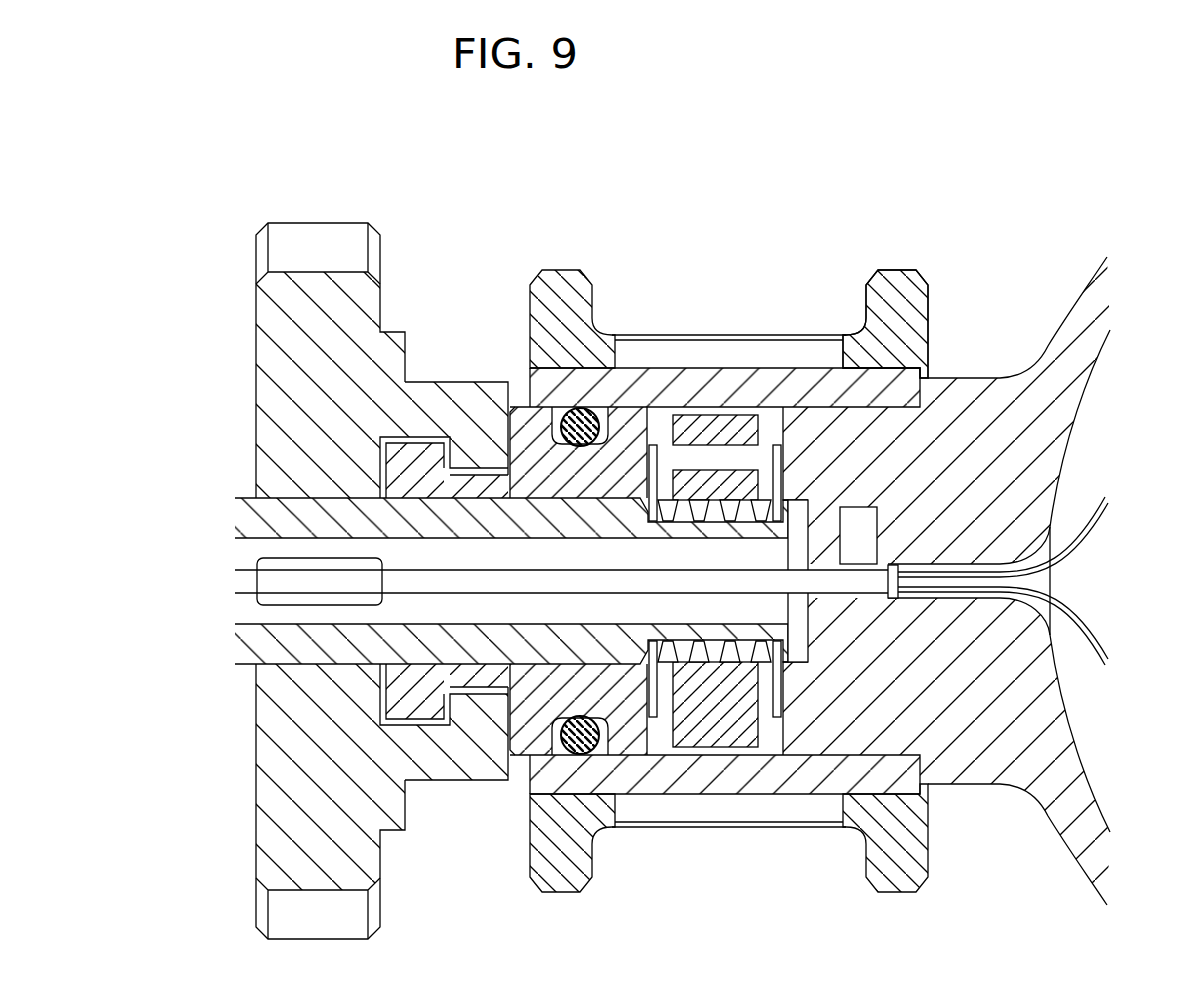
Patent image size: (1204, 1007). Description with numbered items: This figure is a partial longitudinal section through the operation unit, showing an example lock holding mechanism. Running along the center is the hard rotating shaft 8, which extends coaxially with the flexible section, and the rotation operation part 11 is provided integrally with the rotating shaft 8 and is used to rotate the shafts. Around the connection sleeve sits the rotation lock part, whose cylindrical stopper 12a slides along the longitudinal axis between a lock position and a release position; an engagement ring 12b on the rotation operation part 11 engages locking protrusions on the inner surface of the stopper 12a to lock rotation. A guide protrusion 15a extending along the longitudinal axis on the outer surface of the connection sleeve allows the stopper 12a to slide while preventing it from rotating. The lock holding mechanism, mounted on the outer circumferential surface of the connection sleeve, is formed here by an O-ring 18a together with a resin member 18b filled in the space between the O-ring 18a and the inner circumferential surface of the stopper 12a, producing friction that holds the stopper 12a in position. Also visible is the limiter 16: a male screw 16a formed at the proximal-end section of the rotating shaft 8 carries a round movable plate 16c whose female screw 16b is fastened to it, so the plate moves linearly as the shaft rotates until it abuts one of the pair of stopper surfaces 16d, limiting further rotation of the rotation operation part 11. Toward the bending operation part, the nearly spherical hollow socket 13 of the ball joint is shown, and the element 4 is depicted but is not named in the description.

The cable 4 is at (1103, 497).
The rotating shaft 8 is at (274, 498).
The rotation operation part 11 is at (312, 222).
The stopper 12a is at (895, 267).
The engagement ring 12b is at (455, 381).
The socket 13 is at (1082, 284).
The guide protrusion 15a is at (262, 560).
The limiter 16 is at (668, 208).
The male screw 16a is at (737, 500).
The female screw 16b is at (762, 504).
The movable plate 16c is at (707, 413).
The stopper surfaces 16d is at (653, 445).
The O-ring 18a is at (578, 408).
The resin member 18b is at (607, 382).